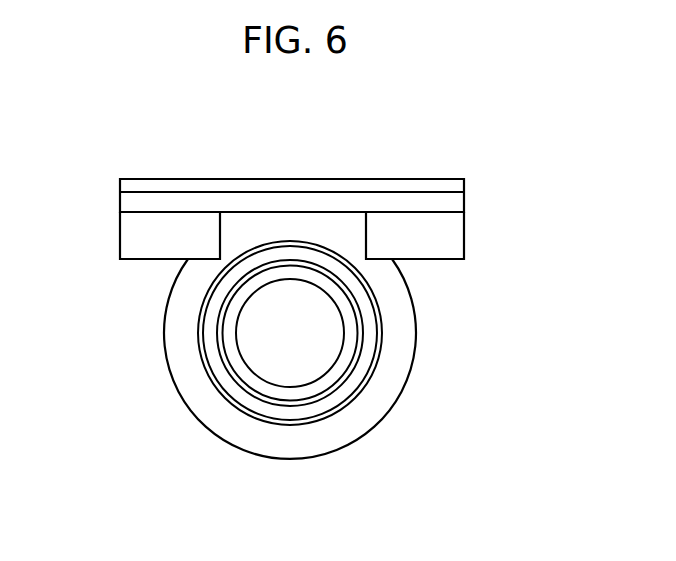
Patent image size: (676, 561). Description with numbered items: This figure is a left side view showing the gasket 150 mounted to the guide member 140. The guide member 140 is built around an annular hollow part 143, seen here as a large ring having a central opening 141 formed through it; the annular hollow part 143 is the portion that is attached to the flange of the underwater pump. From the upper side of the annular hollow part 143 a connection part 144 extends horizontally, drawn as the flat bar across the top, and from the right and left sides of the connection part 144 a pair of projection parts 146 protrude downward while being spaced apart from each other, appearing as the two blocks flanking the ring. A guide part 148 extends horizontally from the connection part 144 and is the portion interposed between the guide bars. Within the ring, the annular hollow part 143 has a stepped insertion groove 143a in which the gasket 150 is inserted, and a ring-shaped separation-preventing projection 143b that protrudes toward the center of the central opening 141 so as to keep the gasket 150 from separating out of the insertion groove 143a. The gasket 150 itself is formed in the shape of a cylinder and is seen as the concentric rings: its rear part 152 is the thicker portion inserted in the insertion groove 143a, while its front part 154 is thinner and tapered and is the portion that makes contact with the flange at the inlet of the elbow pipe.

The guide member 140 is at (326, 396).
The central opening 141 is at (267, 360).
The annular hollow part 143 is at (268, 440).
The stepped insertion groove 143a is at (365, 393).
The separation-preventing projection 143b is at (237, 365).
The connection part 144 is at (333, 187).
The projection parts 146 is at (142, 238).
The guide part 148 is at (183, 203).
The gasket 150 is at (298, 395).
The rear part 152 is at (337, 403).
The front part 154 is at (312, 408).